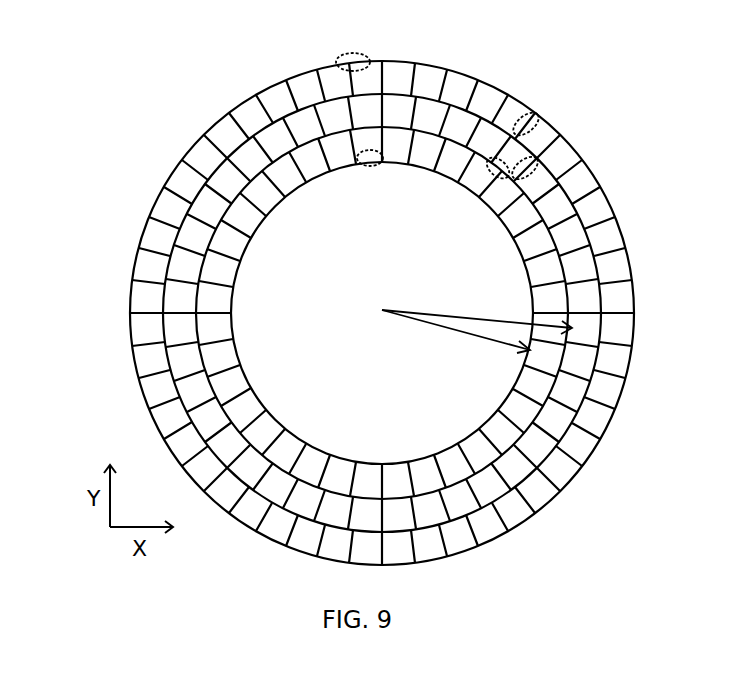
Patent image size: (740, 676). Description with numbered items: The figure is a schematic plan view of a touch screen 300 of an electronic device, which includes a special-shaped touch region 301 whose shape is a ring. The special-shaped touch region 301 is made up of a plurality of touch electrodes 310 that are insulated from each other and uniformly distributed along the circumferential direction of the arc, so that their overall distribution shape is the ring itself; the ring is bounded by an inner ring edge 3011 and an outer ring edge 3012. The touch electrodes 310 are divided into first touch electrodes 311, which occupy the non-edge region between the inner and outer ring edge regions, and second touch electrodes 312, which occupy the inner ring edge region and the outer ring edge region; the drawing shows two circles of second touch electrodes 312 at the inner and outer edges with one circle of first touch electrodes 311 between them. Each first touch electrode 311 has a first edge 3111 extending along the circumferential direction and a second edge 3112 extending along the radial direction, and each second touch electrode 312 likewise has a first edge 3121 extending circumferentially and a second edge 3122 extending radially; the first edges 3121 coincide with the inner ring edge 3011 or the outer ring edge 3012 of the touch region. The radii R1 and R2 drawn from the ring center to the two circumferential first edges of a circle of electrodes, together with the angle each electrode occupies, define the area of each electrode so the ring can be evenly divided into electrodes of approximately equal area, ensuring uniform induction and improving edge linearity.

The touch screen 300 is at (345, 288).
The special-shaped touch region 301 is at (537, 95).
The touch electrodes 310 is at (339, 303).
The first touch electrodes 311 is at (335, 115).
The second touch electrodes 312 is at (339, 313).
The inner ring edge 3011 is at (231, 283).
The outer ring edge 3012 is at (147, 227).
The first edge of first touch electrode 3111 is at (500, 178).
The second edge of first touch electrode 3112 is at (537, 167).
The first edge of second touch electrode 3121 is at (357, 55).
The second edge of second touch electrode 3122 is at (532, 130).
The inner radius R1 is at (428, 325).
The outer radius R2 is at (473, 318).